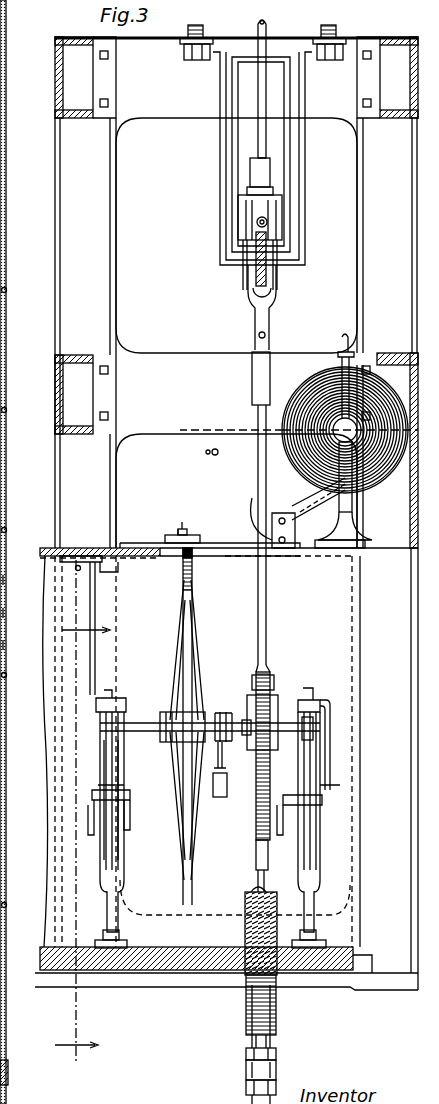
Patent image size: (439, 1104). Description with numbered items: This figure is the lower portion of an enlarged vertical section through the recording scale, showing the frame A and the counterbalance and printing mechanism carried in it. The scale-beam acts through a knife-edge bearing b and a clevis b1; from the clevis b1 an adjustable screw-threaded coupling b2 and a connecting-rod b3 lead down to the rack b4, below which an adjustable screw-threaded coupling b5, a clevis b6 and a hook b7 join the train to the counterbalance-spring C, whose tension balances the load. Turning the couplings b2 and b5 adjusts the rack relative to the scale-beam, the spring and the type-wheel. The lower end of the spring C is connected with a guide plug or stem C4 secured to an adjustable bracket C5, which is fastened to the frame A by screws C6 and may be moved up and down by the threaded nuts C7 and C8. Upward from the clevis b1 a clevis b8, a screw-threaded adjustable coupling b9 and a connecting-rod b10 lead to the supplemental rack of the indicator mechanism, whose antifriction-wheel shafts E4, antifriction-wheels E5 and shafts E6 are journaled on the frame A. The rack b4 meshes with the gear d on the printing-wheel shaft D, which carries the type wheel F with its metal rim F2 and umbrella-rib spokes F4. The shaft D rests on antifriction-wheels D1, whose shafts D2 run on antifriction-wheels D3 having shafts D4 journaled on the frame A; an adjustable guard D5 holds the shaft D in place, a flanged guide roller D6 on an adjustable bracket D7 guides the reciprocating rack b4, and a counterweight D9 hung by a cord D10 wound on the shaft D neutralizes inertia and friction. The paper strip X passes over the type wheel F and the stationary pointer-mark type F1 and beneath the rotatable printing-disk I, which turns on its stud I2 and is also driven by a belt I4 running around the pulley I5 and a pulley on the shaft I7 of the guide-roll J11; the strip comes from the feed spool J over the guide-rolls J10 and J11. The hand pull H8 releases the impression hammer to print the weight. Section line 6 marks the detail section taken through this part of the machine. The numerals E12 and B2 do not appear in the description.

The frame A is at (136, 997).
The wall strip E12 is at (35, 343).
The shafts of antifriction-wheels E4 is at (32, 568).
The antifriction-wheels E5 is at (32, 600).
The shafts of antifriction-wheels E6 is at (32, 632).
The connecting-rod b10 is at (262, 93).
The screw-threaded adjustable coupling b9 is at (256, 176).
The clevis b8 is at (240, 212).
The hatched stem B2 is at (258, 278).
The knife-edge bearing b is at (273, 276).
The clevis b1 is at (277, 289).
The adjustable screw-threaded coupling b2 is at (264, 372).
The connecting-rod b3 is at (258, 598).
The rack b4 is at (272, 690).
The adjustable screw-threaded coupling b5 is at (257, 855).
The clevis b6 is at (257, 880).
The hook b7 is at (254, 890).
The feed reel or spool J is at (331, 386).
The guide-roll J10 is at (295, 520).
The guide-roll J11 is at (286, 541).
The hand slide or pull H8 is at (218, 447).
The rotatable printing-disk I is at (219, 543).
The shaft or stud I2 is at (182, 533).
The cord or belt I4 is at (199, 519).
The pulley I5 is at (168, 534).
The shaft of guide-roller I7 is at (254, 516).
The paper strip or recording-tape X is at (86, 547).
The printing or type wheel F is at (182, 726).
The stationary pointer-mark type F1 is at (177, 660).
The metal rim F2 is at (189, 610).
The umbrella-rib spokes F4 is at (180, 640).
The printing-wheel shaft D is at (290, 720).
The antifriction-wheels D1 is at (312, 742).
The shafts of antifriction-wheels D2 is at (326, 800).
The antifriction-wheels D3 is at (326, 800).
The shafts of antifriction-wheels D4 is at (322, 812).
The adjustable guard D5 is at (246, 720).
The flanged guide wheel or roller D6 is at (252, 700).
The adjustable bracket D7 is at (256, 690).
The counterweight D9 is at (220, 797).
The cord D10 is at (224, 760).
The gear d is at (312, 700).
The counterbalance-spring C is at (246, 925).
The guide plug or stem C4 is at (276, 1042).
The adjustable bracket C5 is at (276, 1068).
The screws C6 is at (276, 1050).
The threaded nut C7 is at (246, 1056).
The threaded nut C8 is at (246, 1088).
The section line 6 is at (82, 823).